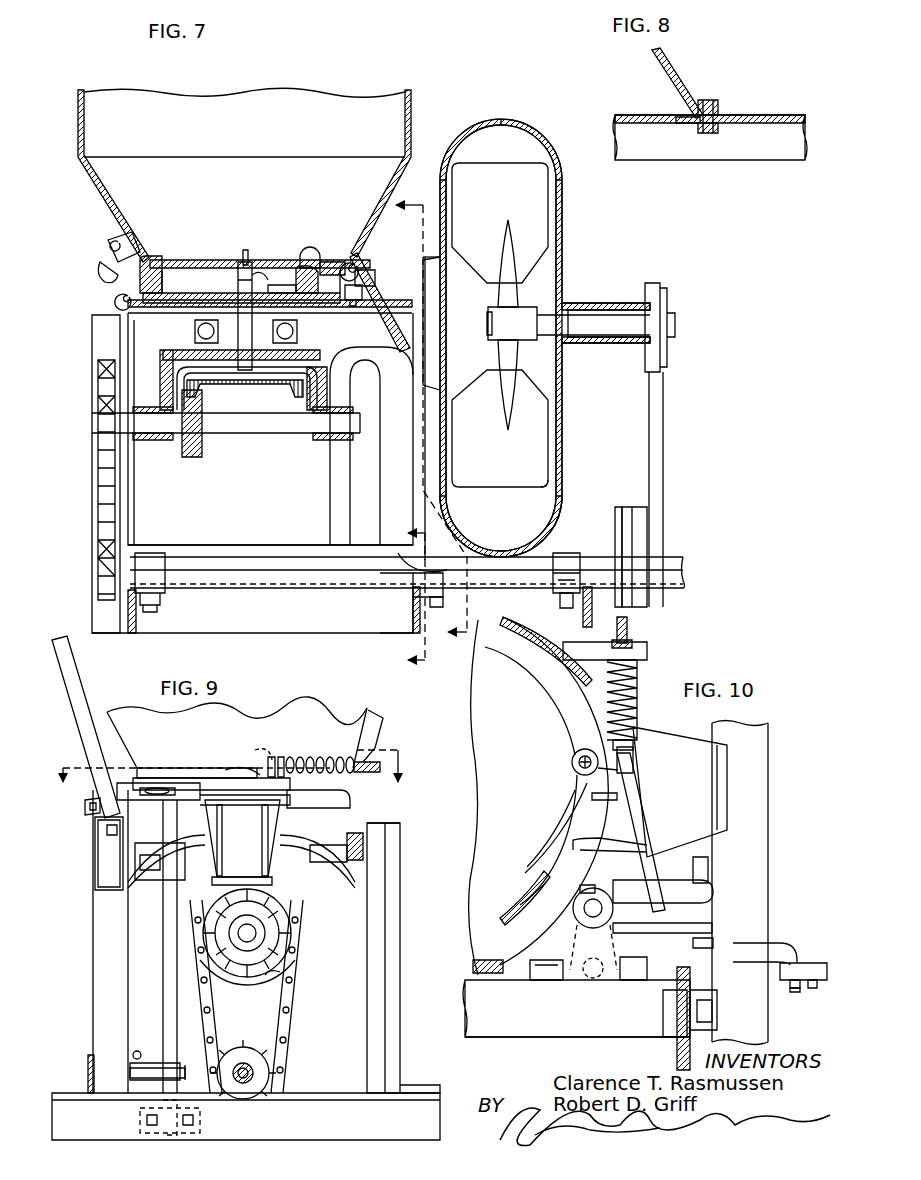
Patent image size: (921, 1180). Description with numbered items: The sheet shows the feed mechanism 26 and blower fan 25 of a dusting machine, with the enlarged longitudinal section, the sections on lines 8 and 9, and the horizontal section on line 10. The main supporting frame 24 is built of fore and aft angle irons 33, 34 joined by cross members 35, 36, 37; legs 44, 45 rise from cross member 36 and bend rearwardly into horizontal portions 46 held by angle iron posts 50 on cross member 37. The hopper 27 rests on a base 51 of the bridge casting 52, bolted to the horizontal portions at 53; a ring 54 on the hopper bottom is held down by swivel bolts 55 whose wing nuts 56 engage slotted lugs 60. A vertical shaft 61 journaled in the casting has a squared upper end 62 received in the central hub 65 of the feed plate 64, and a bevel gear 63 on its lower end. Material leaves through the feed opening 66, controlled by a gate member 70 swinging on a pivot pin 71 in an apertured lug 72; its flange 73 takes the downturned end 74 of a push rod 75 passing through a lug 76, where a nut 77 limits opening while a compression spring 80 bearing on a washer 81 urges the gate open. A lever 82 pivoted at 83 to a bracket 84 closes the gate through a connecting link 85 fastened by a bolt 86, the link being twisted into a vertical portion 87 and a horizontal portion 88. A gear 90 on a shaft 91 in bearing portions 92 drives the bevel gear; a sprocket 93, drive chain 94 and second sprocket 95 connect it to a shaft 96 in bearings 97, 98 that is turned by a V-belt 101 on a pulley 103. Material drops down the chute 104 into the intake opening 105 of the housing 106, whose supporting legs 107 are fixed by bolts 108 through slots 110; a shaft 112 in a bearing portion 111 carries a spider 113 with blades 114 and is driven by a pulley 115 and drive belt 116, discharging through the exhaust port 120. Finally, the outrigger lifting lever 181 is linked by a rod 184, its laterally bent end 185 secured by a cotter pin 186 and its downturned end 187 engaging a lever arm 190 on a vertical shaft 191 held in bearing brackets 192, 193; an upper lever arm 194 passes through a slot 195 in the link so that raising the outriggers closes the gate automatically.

In FIG. 7, the section line 8— 8 is at (419, 597).
In FIG. 7, the section line 9— 9 is at (432, 420).
In FIG. 9, the section line 10— 10 is at (228, 780).
In FIG. 7, the main supporting frame 24 is at (238, 542).
In FIG. 7, the blower fan 25 is at (570, 222).
In FIG. 7, the hopper assembly 26 is at (103, 302).
In FIG. 9, the hopper assembly 26 is at (380, 814).
In FIG. 10, the hopper assembly 26 is at (755, 740).
In FIG. 7, the hopper 27 is at (259, 144).
In FIG. 9, the hopper 27 is at (247, 741).
In FIG. 10, the hopper 27 is at (500, 978).
In FIG. 7, the angle iron 33 is at (298, 556).
In FIG. 9, the angle iron 33 is at (400, 1075).
In FIG. 9, the angle iron 34 is at (88, 1060).
In FIG. 7, the cross member 35 is at (585, 610).
In FIG. 7, the cross member 36 is at (412, 608).
In FIG. 8, the cross member 36 is at (740, 145).
In FIG. 9, the cross member 36 is at (308, 1093).
In FIG. 10, the cross member 36 is at (760, 872).
In FIG. 7, the cross member 37 is at (138, 627).
In FIG. 7, the leg 44 is at (390, 465).
In FIG. 9, the leg 44 is at (390, 870).
In FIG. 9, the leg 45 is at (96, 930).
In FIG. 10, the leg 45 is at (615, 1040).
In FIG. 7, the horizontal portions 46 is at (225, 379).
In FIG. 10, the horizontal portions 46 is at (490, 1020).
In FIG. 7, the angle iron posts 50 is at (95, 350).
In FIG. 7, the base 51 is at (165, 322).
In FIG. 9, the base 51 is at (363, 845).
In FIG. 7, the bridge casting 52 is at (315, 363).
In FIG. 9, the bridge casting 52 is at (322, 872).
In FIG. 7, the bolts 53 is at (195, 333).
In FIG. 9, the bolts 53 is at (328, 847).
In FIG. 7, the ring 54 is at (215, 260).
In FIG. 9, the ring 54 is at (200, 778).
In FIG. 10, the ring 54 is at (555, 695).
In FIG. 7, the swivel bolts 55 is at (100, 265).
In FIG. 7, the wing nuts 56 is at (118, 242).
In FIG. 7, the slotted lugs 60 is at (150, 258).
In FIG. 7, the shaft 61 is at (238, 300).
In FIG. 7, the squared upper end 62 is at (262, 272).
In FIG. 7, the bevel gear 63 is at (255, 398).
In FIG. 9, the bevel gear 63 is at (292, 925).
In FIG. 7, the feed plate 64 is at (200, 295).
In FIG. 7, the central hub 65 is at (244, 262).
In FIG. 7, the feed opening 66 is at (350, 290).
In FIG. 10, the feed opening 66 is at (545, 870).
In FIG. 7, the gate member 70 is at (290, 292).
In FIG. 9, the gate member 70 is at (212, 808).
In FIG. 10, the gate member 70 is at (550, 820).
In FIG. 7, the pivot pin 71 is at (307, 255).
In FIG. 9, the pivot pin 71 is at (262, 752).
In FIG. 10, the pivot pin 71 is at (572, 770).
In FIG. 7, the apertured lug 72 is at (300, 265).
In FIG. 10, the apertured lug 72 is at (572, 758).
In FIG. 7, the flange 73 is at (365, 280).
In FIG. 9, the flange 73 is at (245, 772).
In FIG. 10, the flange 73 is at (625, 772).
In FIG. 7, the downturned end 74 is at (365, 295).
In FIG. 9, the downturned end 74 is at (285, 803).
In FIG. 10, the downturned end 74 is at (635, 762).
In FIG. 7, the push rod 75 is at (360, 262).
In FIG. 9, the push rod 75 is at (325, 757).
In FIG. 10, the push rod 75 is at (633, 685).
In FIG. 9, the apertured lug 76 is at (374, 740).
In FIG. 10, the apertured lug 76 is at (630, 652).
In FIG. 9, the nut 77 is at (370, 752).
In FIG. 10, the nut 77 is at (630, 640).
In FIG. 9, the compression spring 80 is at (305, 757).
In FIG. 10, the compression spring 80 is at (637, 707).
In FIG. 9, the washer 81 is at (272, 757).
In FIG. 10, the washer 81 is at (636, 740).
In FIG. 9, the lever 82 is at (75, 702).
In FIG. 10, the lever 82 is at (677, 1050).
In FIG. 9, the pivot 83 is at (107, 830).
In FIG. 10, the pivot 83 is at (713, 1012).
In FIG. 9, the bracket 84 is at (95, 858).
In FIG. 10, the bracket 84 is at (717, 995).
In FIG. 9, the connecting link 85 is at (216, 820).
In FIG. 10, the connecting link 85 is at (665, 850).
In FIG. 9, the bolt 86 is at (88, 808).
In FIG. 10, the bolt 86 is at (663, 1015).
In FIG. 9, the vertical portion 87 is at (115, 783).
In FIG. 10, the vertical portion 87 is at (700, 925).
In FIG. 7, the horizontal portion 88 is at (333, 260).
In FIG. 9, the horizontal portion 88 is at (255, 808).
In FIG. 10, the horizontal portion 88 is at (645, 800).
In FIG. 7, the gear 90 is at (195, 458).
In FIG. 9, the gear 90 is at (245, 985).
In FIG. 7, the shaft 91 is at (218, 433).
In FIG. 9, the shaft 91 is at (256, 935).
In FIG. 7, the bearing portions 92 is at (158, 440).
In FIG. 9, the bearing portions 92 is at (265, 930).
In FIG. 7, the sprocket 93 is at (95, 420).
In FIG. 9, the sprocket 93 is at (270, 990).
In FIG. 7, the drive chain 94 is at (98, 470).
In FIG. 9, the drive chain 94 is at (290, 1005).
In FIG. 7, the second sprocket 95 is at (98, 578).
In FIG. 9, the second sprocket 95 is at (246, 1048).
In FIG. 7, the shaft 96 is at (258, 588).
In FIG. 9, the shaft 96 is at (243, 1085).
In FIG. 7, the bearing 97 is at (150, 560).
In FIG. 9, the bearing 97 is at (255, 1073).
In FIG. 7, the bearing 98 is at (570, 560).
In FIG. 7, the V-belt 101 is at (632, 510).
In FIG. 7, the pulley 103 is at (618, 515).
In FIG. 7, the chute 104 is at (400, 360).
In FIG. 9, the chute 104 is at (265, 848).
In FIG. 10, the chute 104 is at (705, 785).
In FIG. 7, the intake opening 105 is at (438, 282).
In FIG. 7, the housing 106 is at (493, 118).
In FIG. 7, the supporting legs 107 is at (545, 545).
In FIG. 8, the supporting legs 107 is at (676, 72).
In FIG. 7, the bolts 108 is at (415, 553).
In FIG. 8, the bolts 108 is at (713, 100).
In FIG. 8, the slots 110 is at (682, 125).
In FIG. 7, the bearing portion 111 is at (590, 303).
In FIG. 7, the shaft 112 is at (592, 345).
In FIG. 7, the spider 113 is at (498, 350).
In FIG. 7, the blades 114 is at (490, 178).
In FIG. 7, the pulley 115 is at (667, 305).
In FIG. 7, the drive belt 116 is at (662, 408).
In FIG. 7, the exhaust port 120 is at (503, 505).
In FIG. 10, the outrigger lifting lever 181 is at (805, 960).
In FIG. 9, the rod 184 is at (138, 1050).
In FIG. 10, the rod 184 is at (753, 944).
In FIG. 10, the laterally bent end 185 is at (807, 992).
In FIG. 10, the cotter pin 186 is at (793, 992).
In FIG. 9, the downturned end 187 is at (130, 1078).
In FIG. 10, the downturned end 187 is at (590, 980).
In FIG. 9, the lever arm 190 is at (130, 1070).
In FIG. 10, the lever arm 190 is at (575, 950).
In FIG. 9, the shaft 191 is at (163, 995).
In FIG. 10, the shaft 191 is at (590, 903).
In FIG. 9, the bearing bracket 192 is at (160, 1135).
In FIG. 10, the bearing bracket 192 is at (708, 876).
In FIG. 9, the bearing bracket 193 is at (170, 880).
In FIG. 10, the bearing bracket 193 is at (570, 980).
In FIG. 9, the lever arm 194 is at (170, 785).
In FIG. 10, the lever arm 194 is at (705, 893).
In FIG. 9, the slot 195 is at (135, 778).
In FIG. 10, the slot 195 is at (658, 893).